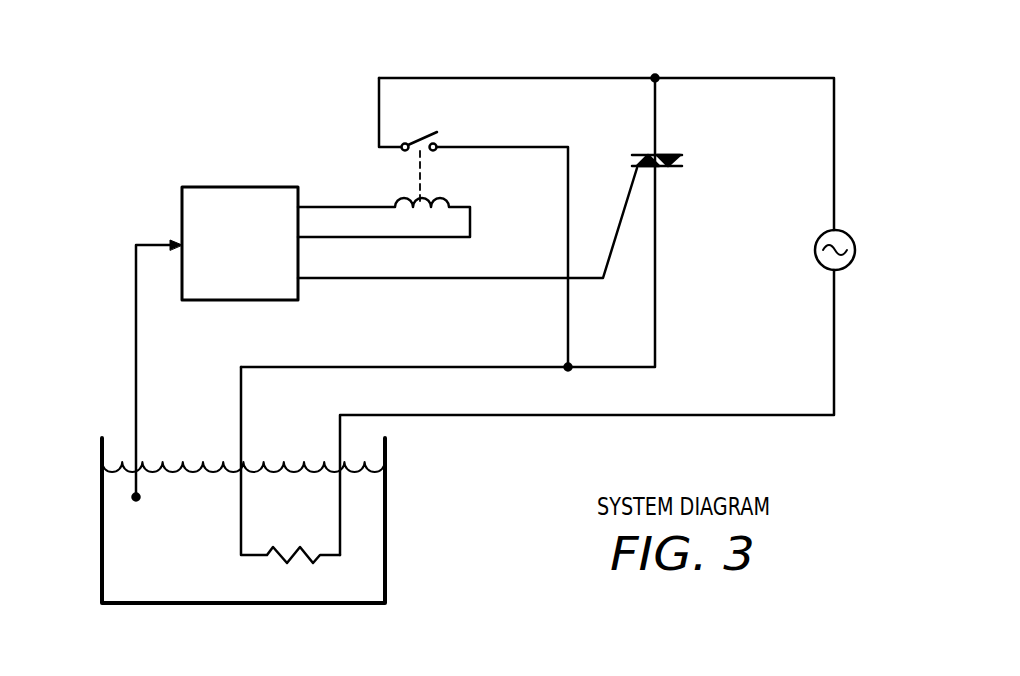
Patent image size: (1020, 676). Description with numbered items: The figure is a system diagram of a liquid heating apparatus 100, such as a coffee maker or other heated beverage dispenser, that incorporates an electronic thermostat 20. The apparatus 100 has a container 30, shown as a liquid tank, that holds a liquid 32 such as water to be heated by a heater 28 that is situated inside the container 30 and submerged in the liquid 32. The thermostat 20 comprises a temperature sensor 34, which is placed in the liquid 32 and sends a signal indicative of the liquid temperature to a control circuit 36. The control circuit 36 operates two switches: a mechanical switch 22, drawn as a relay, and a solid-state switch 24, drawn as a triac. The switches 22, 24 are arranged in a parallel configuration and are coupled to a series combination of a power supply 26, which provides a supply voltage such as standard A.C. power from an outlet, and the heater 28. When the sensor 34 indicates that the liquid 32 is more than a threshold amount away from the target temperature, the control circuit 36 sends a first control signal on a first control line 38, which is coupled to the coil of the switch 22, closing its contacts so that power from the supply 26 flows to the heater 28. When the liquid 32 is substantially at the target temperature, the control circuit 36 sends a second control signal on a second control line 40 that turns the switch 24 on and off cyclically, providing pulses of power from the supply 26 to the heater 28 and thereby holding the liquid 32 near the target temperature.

The liquid heating apparatus 100 is at (535, 62).
The electronic thermostat 20 is at (227, 175).
The mechanical switch 22 is at (452, 112).
The solid-state switch 24 is at (672, 153).
The power supply 26 is at (830, 268).
The heater 28 is at (327, 523).
The container 30 is at (388, 455).
The liquid 32 is at (133, 579).
The temperature sensor 34 is at (148, 487).
The control circuit 36 is at (237, 186).
The first control line 38 is at (472, 223).
The second control line 40 is at (586, 280).